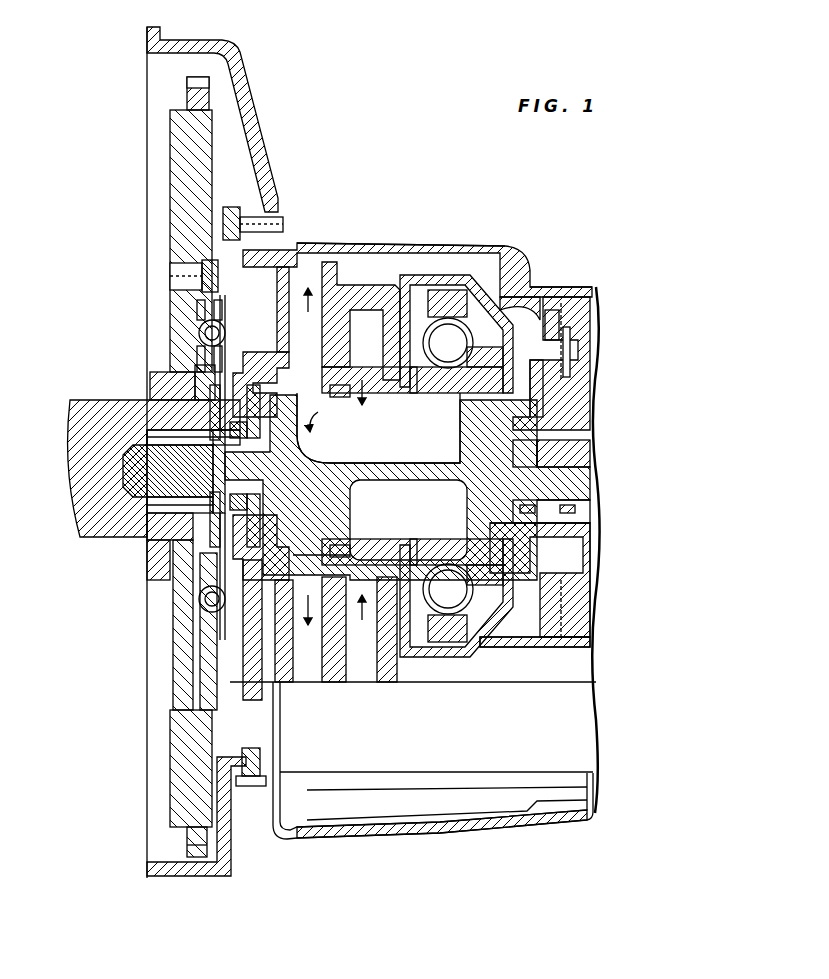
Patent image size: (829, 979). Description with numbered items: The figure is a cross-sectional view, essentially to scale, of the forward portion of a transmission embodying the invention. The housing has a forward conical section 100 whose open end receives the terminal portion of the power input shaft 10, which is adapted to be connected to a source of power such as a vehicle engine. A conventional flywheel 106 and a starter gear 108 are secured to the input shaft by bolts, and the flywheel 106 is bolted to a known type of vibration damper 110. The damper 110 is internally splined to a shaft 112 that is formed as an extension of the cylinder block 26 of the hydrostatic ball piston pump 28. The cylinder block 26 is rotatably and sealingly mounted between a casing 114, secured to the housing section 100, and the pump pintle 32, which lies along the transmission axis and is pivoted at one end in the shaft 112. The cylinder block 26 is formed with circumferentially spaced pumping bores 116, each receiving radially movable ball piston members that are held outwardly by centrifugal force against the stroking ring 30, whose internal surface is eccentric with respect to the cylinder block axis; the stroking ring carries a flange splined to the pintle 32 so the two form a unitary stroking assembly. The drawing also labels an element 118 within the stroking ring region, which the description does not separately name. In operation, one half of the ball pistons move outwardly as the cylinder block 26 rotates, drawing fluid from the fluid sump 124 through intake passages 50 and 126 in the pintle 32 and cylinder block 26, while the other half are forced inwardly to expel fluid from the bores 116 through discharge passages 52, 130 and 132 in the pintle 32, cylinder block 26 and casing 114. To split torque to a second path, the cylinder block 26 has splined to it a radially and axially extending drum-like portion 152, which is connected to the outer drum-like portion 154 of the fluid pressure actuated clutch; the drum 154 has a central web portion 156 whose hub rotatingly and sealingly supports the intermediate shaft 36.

The power input shaft 10 is at (107, 407).
The cylinder block 26 is at (343, 398).
The hydrostatic ball piston pump 28 is at (380, 278).
The stroking ring 30 is at (457, 282).
The pump pintle 32 is at (330, 476).
The intermediate shaft 36 is at (580, 452).
The intake passage 50 is at (360, 533).
The discharge passage 52 is at (378, 428).
The forward conical section 100 is at (257, 168).
The flywheel 106 is at (182, 170).
The starter gear 108 is at (203, 100).
The vibration damper 110 is at (226, 331).
The shaft 112 is at (143, 470).
The casing 114 is at (306, 250).
The pumping bores 116 is at (445, 393).
The bearing 118 is at (448, 466).
The fluid sump 124 is at (397, 807).
The intake passage 126 is at (363, 550).
The discharge passage 130 is at (306, 390).
The discharge passage 132 is at (298, 308).
The drum-like portion 152 is at (447, 300).
The outer drum-like portion 154 is at (507, 297).
The central web portion 156 is at (547, 332).